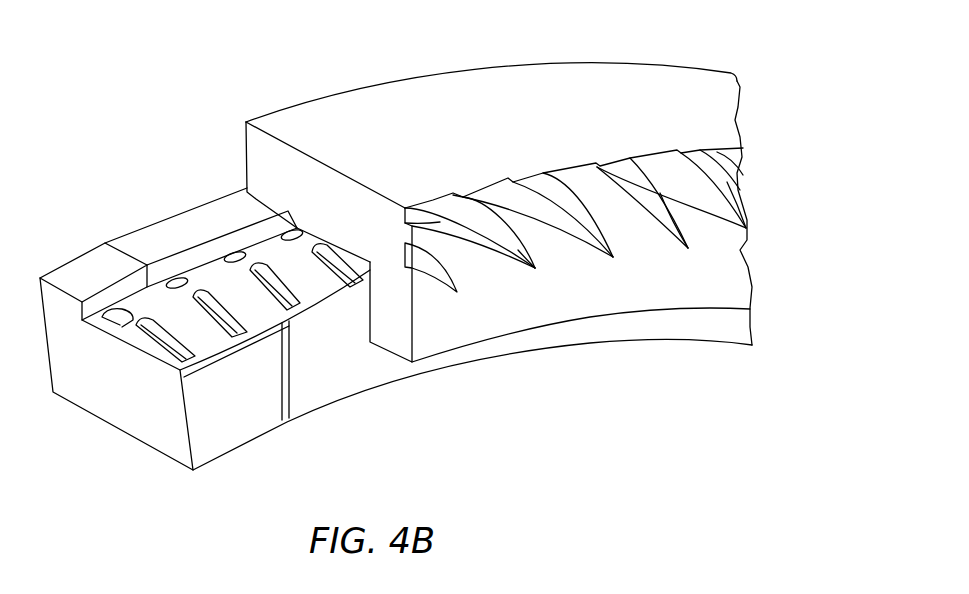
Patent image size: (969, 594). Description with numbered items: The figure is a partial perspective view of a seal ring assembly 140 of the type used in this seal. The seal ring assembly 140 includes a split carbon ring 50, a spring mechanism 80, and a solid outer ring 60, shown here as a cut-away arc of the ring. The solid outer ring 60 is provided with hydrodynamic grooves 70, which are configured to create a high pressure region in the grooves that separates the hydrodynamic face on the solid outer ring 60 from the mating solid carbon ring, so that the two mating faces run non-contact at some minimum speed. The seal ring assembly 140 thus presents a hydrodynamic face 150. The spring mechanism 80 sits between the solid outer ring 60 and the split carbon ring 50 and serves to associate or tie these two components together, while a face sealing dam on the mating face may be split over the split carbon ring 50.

The seal ring assembly 140 is at (150, 127).
The solid outer ring 60 is at (403, 123).
The hydrodynamic grooves 70 is at (712, 168).
The hydrodynamic face 150 is at (638, 295).
The split carbon ring 50 is at (323, 358).
The spring mechanism 80 is at (192, 330).